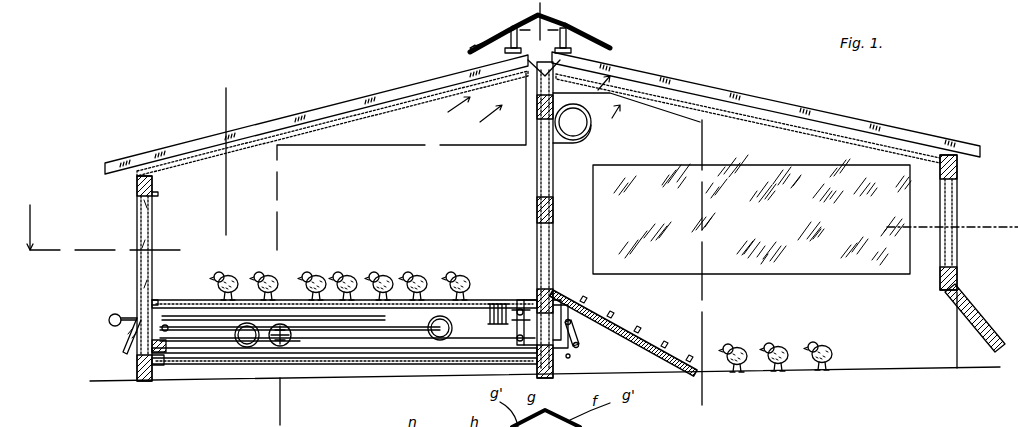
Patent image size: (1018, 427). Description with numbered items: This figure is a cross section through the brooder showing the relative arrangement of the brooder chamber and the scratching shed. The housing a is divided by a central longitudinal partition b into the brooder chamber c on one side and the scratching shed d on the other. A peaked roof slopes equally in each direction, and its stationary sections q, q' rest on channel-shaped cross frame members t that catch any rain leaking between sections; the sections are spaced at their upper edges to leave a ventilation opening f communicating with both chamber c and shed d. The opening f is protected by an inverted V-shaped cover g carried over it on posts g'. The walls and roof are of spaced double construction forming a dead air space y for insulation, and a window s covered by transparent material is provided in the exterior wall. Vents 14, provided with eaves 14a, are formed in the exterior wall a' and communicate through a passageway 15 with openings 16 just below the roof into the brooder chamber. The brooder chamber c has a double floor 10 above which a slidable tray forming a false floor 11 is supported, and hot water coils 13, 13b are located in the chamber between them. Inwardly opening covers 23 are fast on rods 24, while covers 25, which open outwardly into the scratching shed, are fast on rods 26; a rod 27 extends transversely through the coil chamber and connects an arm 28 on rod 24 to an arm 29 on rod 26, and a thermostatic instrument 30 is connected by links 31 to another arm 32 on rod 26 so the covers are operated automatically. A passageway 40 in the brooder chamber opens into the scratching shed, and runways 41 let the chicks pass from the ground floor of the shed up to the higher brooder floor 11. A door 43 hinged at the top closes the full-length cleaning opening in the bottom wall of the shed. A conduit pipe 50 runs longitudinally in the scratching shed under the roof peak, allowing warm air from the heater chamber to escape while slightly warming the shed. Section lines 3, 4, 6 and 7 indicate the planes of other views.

The section line 3- 3 is at (533, 12).
The section line 4- 4 is at (550, 12).
The section line 6- 6 is at (99, 218).
The section line 7- 7 is at (234, 106).
The inverted V-shaped cover g is at (555, 32).
The post g' is at (541, 34).
The floor 10 is at (212, 372).
The false floor 11 is at (492, 298).
The hot water coils 13 is at (254, 352).
The roller wheel 13b is at (312, 370).
The vents 14 is at (125, 363).
The eaves 14a is at (127, 340).
The passageway 15 is at (153, 234).
The openings 16 is at (158, 205).
The inwardly opening covers 23 is at (170, 326).
The rods 24 is at (162, 378).
The covers 25 is at (564, 305).
The rods 26 is at (578, 348).
The rod 27 is at (200, 340).
The arm 28 is at (190, 322).
The arm 29 is at (580, 330).
The thermostatic instrument 30 is at (506, 300).
The links 31 is at (516, 322).
The arm 32 is at (526, 346).
The passageway 40 is at (562, 263).
The runways 41 is at (640, 322).
The door 43 is at (975, 320).
The conduit pipe 50 is at (592, 124).
The housing a is at (98, 261).
The exterior wall a' is at (98, 235).
The central longitudinal partition b is at (537, 187).
The brooder chamber c is at (401, 161).
The scratching shed d is at (756, 311).
The ventilation opening f is at (600, 68).
The stationary roof section q is at (766, 103).
The stationary roof section q' is at (316, 114).
The window s is at (870, 258).
The cross frame members t is at (397, 110).
The dead air space y is at (531, 161).